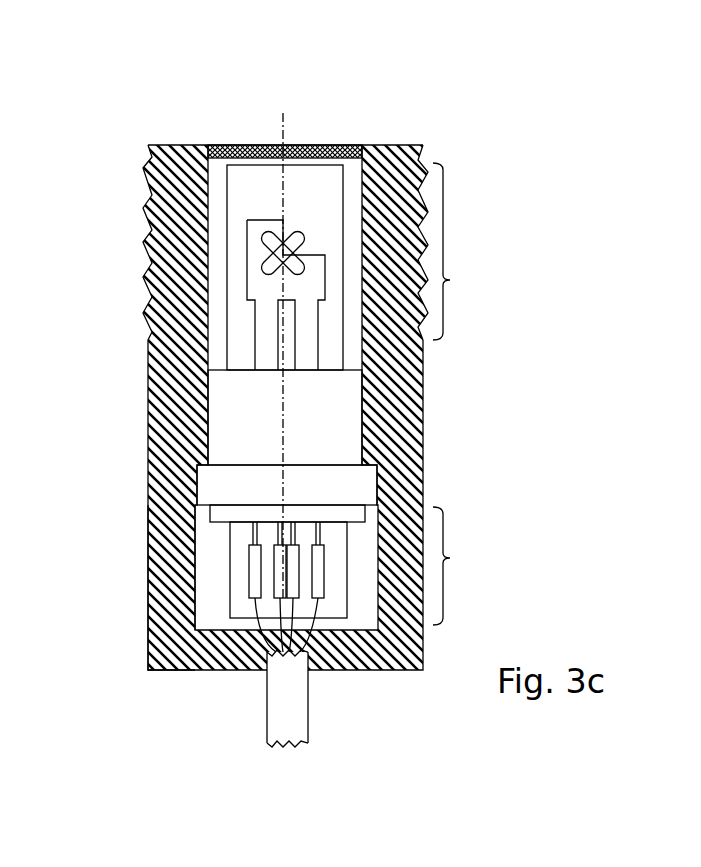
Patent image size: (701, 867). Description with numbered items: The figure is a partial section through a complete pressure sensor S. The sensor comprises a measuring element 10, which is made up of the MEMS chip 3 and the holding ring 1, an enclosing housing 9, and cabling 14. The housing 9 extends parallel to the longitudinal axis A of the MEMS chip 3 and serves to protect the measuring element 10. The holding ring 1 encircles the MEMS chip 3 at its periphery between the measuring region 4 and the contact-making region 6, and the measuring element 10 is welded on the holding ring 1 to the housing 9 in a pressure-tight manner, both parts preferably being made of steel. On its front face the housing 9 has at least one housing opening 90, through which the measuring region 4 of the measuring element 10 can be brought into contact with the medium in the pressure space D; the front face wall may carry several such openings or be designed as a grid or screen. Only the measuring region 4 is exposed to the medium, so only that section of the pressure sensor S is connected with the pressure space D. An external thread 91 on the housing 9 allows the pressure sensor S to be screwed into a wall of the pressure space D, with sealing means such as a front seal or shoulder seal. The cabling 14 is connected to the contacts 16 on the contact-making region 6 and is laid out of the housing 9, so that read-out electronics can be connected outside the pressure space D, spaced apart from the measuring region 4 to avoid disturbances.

The holding ring 1 is at (255, 427).
The MEMS chip 3 is at (227, 268).
The measuring region 4 is at (454, 251).
The contact-making region 6 is at (355, 566).
The housing 9 is at (158, 582).
The measuring element 10 is at (150, 168).
The cabling 14 is at (283, 678).
The contacts 16 is at (258, 582).
The housing opening 90 is at (300, 147).
The external thread 91 is at (417, 205).
The pressure sensor S is at (148, 125).
The pressure space D is at (400, 121).
The longitudinal axis A is at (280, 145).